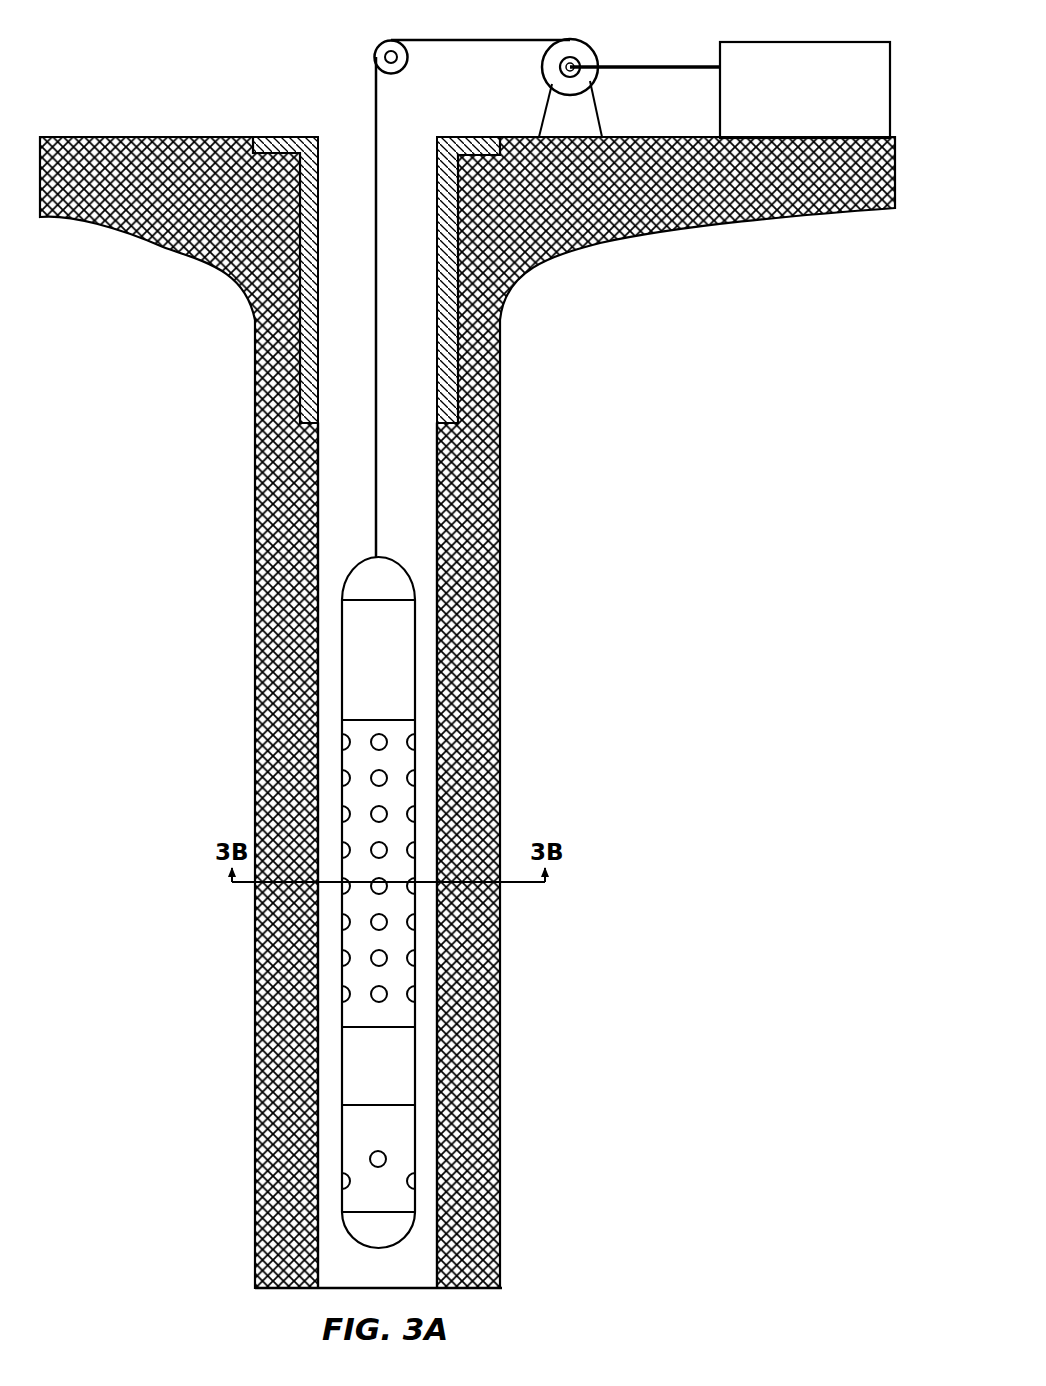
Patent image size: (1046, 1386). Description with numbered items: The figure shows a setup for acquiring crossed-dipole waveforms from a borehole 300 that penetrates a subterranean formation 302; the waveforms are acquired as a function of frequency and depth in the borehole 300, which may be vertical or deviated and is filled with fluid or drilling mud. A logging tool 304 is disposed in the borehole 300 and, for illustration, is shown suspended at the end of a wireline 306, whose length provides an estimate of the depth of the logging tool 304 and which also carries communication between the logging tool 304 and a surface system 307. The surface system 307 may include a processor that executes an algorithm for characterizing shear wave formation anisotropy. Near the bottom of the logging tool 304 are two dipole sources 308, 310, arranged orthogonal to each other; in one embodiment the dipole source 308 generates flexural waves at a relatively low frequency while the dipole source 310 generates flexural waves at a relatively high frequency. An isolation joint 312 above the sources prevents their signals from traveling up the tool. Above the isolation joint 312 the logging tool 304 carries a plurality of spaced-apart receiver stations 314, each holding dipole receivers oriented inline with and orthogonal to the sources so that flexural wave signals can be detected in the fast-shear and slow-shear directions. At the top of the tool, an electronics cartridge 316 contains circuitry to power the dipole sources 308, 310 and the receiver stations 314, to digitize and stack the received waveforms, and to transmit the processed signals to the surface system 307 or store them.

The borehole 300 is at (423, 482).
The subterranean formation 302 is at (487, 403).
The logging tool 304 is at (417, 657).
The wireline 306 is at (376, 115).
The surface system 307 is at (805, 90).
The dipole source 308 is at (370, 1153).
The dipole source 310 is at (342, 1178).
The isolation joint 312 is at (393, 1058).
The receiver stations 314 is at (337, 812).
The electronics cartridge 316 is at (367, 652).